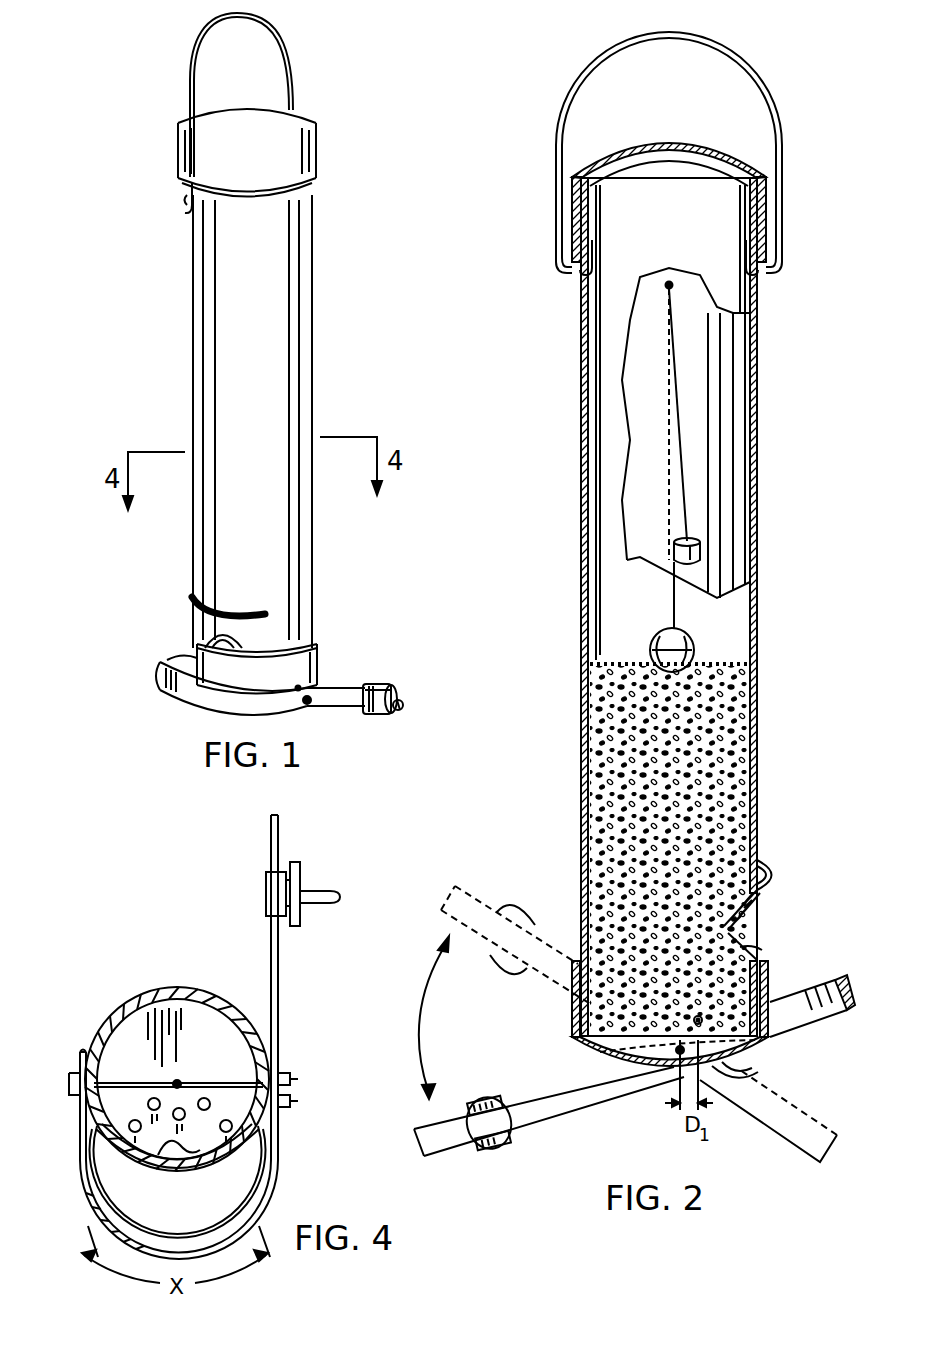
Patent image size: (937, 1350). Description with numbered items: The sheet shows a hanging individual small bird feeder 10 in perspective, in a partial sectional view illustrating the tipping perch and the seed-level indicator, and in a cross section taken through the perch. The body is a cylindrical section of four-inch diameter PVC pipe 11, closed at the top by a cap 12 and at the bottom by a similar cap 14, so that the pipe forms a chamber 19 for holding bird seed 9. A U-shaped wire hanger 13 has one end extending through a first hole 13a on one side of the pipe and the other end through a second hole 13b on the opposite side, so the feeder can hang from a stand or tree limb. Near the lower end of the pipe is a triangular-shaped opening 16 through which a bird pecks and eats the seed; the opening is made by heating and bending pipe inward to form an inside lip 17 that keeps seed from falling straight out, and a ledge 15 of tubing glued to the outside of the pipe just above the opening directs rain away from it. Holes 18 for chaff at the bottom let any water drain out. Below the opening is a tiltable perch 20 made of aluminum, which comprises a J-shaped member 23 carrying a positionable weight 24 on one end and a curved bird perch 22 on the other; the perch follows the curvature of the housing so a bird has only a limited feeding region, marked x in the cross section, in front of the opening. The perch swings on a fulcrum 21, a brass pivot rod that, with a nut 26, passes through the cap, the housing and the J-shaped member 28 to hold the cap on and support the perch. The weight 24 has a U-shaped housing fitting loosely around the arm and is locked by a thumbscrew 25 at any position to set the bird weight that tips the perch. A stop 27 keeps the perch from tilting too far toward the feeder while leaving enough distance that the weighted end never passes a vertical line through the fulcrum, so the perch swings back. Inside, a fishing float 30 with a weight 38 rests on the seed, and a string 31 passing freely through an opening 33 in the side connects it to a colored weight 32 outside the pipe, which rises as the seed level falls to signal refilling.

In FIG. 2, the bird seed 9 is at (688, 809).
In FIG. 1, the hanging individual small bird feeder 10 is at (363, 163).
In FIG. 2, the hanging individual small bird feeder 10 is at (778, 83).
In FIG. 4, the hanging individual small bird feeder 10 is at (122, 984).
In FIG. 1, the PVC pipe 11 is at (300, 352).
In FIG. 2, the PVC pipe 11 is at (760, 668).
In FIG. 1, the cap 12 is at (297, 128).
In FIG. 2, the cap 12 is at (672, 143).
In FIG. 1, the U-shaped wire hanger 13 is at (188, 47).
In FIG. 2, the U-shaped wire hanger 13 is at (779, 143).
In FIG. 1, the first hole 13a is at (188, 220).
In FIG. 2, the first hole 13a is at (567, 275).
In FIG. 2, the second hole 13b is at (760, 273).
In FIG. 1, the cap 14 is at (318, 658).
In FIG. 2, the cap 14 is at (578, 1009).
In FIG. 4, the cap 14 is at (172, 988).
In FIG. 1, the ledge 15 is at (190, 596).
In FIG. 2, the ledge 15 is at (771, 862).
In FIG. 1, the triangular-shaped opening 16 is at (226, 640).
In FIG. 2, the triangular-shaped opening 16 is at (748, 946).
In FIG. 2, the inside lip 17 is at (748, 926).
In FIG. 4, the inside lip 17 is at (162, 1160).
In FIG. 2, the holes for chaff 18 is at (748, 1066).
In FIG. 4, the holes for chaff 18 is at (230, 1120).
In FIG. 2, the chamber 19 is at (651, 606).
In FIG. 1, the tiltable perch 20 is at (205, 705).
In FIG. 2, the tiltable perch 20 is at (813, 1024).
In FIG. 4, the tiltable perch 20 is at (290, 1182).
In FIG. 1, the fulcrum 21 is at (309, 703).
In FIG. 2, the fulcrum 21 is at (677, 1047).
In FIG. 4, the fulcrum 21 is at (147, 1082).
In FIG. 1, the curved bird perch 22 is at (163, 655).
In FIG. 2, the curved bird perch 22 is at (835, 980).
In FIG. 4, the curved bird perch 22 is at (200, 1237).
In FIG. 1, the J-shaped member 23 is at (353, 704).
In FIG. 4, the J-shaped member 23 is at (279, 955).
In FIG. 1, the positionable weight 24 is at (395, 690).
In FIG. 2, the positionable weight 24 is at (496, 1146).
In FIG. 4, the positionable weight 24 is at (300, 876).
In FIG. 1, the thumbscrew 25 is at (400, 710).
In FIG. 4, the thumbscrew 25 is at (335, 903).
In FIG. 4, the nut 26 is at (292, 1078).
In FIG. 1, the stop 27 is at (302, 685).
In FIG. 2, the stop 27 is at (697, 1015).
In FIG. 4, the stop 27 is at (293, 1102).
In FIG. 1, the J-shaped member 28 is at (237, 703).
In FIG. 2, the fishing float 30 is at (686, 633).
In FIG. 2, the string 31 is at (676, 590).
In FIG. 2, the colored weight 32 is at (672, 553).
In FIG. 2, the opening 33 is at (668, 280).
In FIG. 2, the weight 38 is at (655, 650).